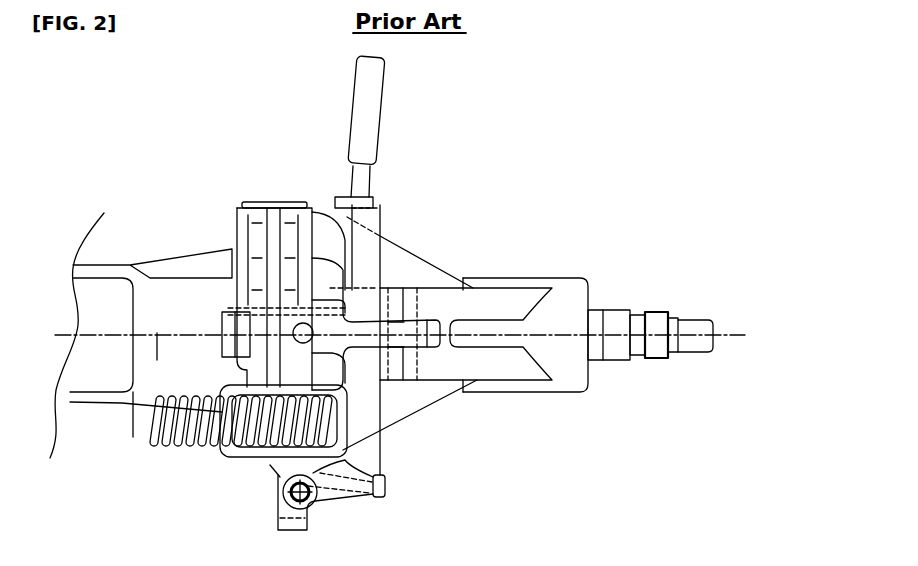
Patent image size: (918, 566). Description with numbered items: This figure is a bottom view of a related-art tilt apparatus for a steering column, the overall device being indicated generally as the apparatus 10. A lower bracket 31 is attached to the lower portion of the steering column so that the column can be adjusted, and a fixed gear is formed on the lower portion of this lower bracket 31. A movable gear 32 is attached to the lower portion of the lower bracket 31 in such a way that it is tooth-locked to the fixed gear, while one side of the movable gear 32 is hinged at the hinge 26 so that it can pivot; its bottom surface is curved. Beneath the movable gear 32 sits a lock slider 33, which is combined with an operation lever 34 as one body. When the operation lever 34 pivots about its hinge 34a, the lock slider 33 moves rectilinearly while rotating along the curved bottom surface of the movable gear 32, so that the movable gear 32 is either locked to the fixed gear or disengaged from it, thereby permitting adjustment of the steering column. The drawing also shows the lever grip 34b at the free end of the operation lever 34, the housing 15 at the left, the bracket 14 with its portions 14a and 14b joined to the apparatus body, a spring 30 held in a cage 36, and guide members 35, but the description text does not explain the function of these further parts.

The shift lever assembly 10 is at (431, 105).
The bracket 14 is at (421, 255).
The bracket body portion 14a is at (448, 297).
The bracket connecting portion 14b is at (425, 288).
The housing 15 is at (150, 263).
The hinge 26 is at (393, 388).
The spring 30 is at (165, 440).
The lower bracket 31 is at (237, 310).
The movable gear 32 is at (220, 320).
The lock slider 33 is at (323, 300).
The operation lever 34 is at (373, 248).
The hinge 34a is at (308, 502).
The lever grip 34b is at (373, 143).
The guide rods 35 is at (290, 298).
The spring cage 36 is at (235, 470).